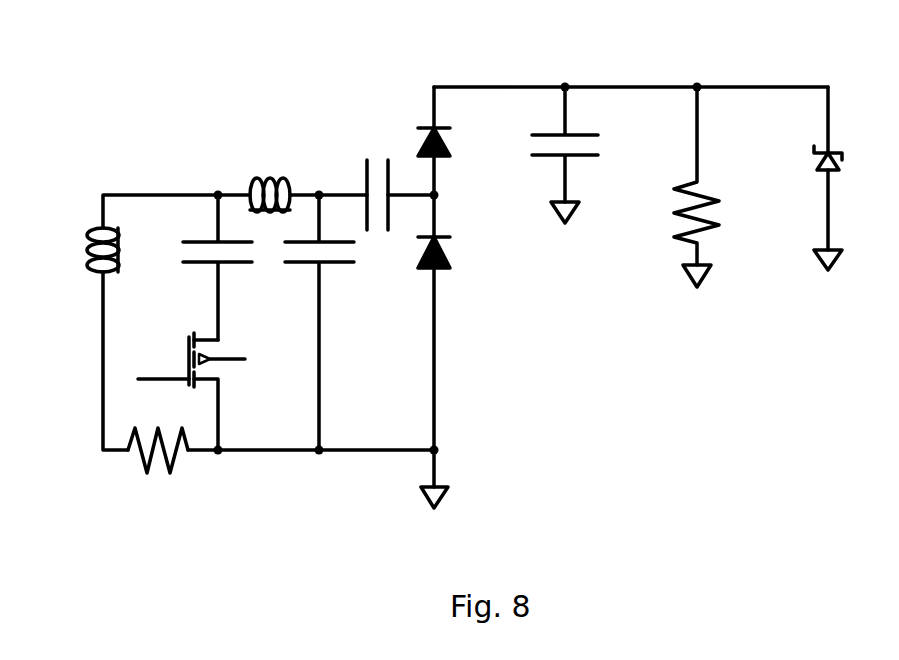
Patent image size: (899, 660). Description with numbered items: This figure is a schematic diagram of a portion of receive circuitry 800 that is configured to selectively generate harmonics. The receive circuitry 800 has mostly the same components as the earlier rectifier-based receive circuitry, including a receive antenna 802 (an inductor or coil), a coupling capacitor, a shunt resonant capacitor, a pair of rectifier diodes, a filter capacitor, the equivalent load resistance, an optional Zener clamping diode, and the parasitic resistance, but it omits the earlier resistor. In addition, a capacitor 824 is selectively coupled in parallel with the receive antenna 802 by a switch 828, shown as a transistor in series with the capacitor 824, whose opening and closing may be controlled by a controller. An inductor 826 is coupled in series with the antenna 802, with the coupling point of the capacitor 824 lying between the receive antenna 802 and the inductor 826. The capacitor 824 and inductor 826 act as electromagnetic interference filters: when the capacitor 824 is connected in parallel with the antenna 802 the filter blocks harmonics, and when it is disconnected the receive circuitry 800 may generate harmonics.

The receive circuitry 800 is at (188, 40).
The receive antenna 802 is at (98, 229).
The capacitor 824 is at (232, 242).
The inductor 826 is at (255, 180).
The switch 828 is at (232, 356).